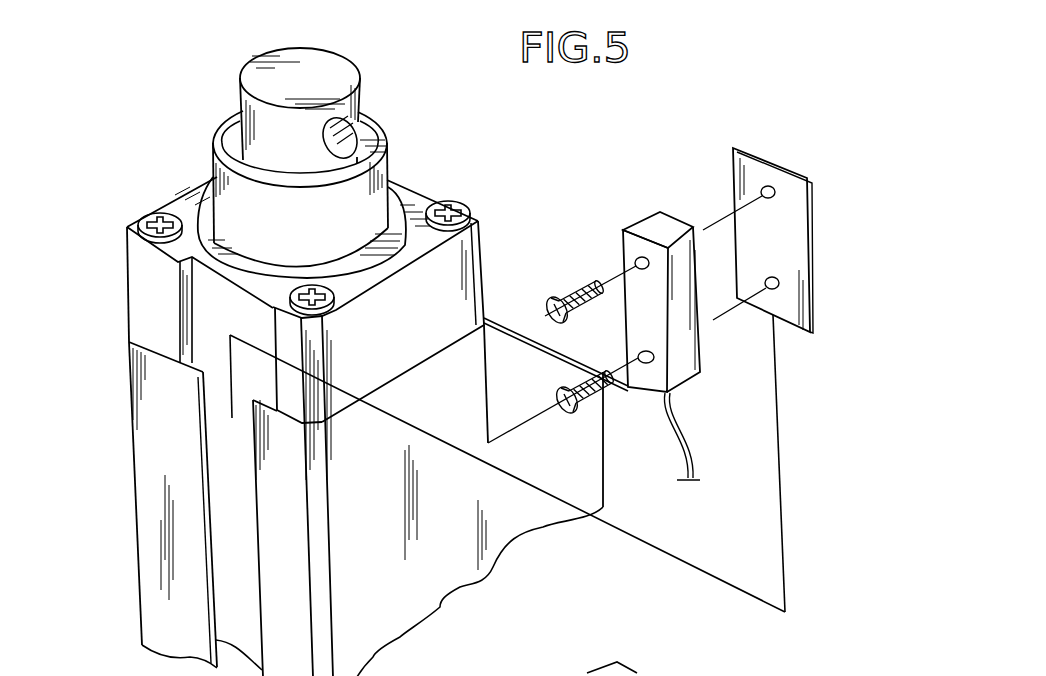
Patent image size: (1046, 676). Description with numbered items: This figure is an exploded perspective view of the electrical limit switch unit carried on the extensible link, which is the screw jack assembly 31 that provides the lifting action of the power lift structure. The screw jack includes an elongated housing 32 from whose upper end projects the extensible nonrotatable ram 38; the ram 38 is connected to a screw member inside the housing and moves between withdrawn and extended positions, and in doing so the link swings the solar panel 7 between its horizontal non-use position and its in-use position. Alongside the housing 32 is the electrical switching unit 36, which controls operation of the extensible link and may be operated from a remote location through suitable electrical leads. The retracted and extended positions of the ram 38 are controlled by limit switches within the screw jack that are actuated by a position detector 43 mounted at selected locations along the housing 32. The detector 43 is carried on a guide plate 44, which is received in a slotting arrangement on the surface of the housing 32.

The solar panel 7 is at (571, 669).
The screw jack assembly 31 is at (128, 513).
The housing 32 is at (407, 610).
The electrical switching unit 36 is at (588, 428).
The ram 38 is at (340, 63).
The position detector 43 is at (626, 305).
The guide plate 44 is at (800, 238).